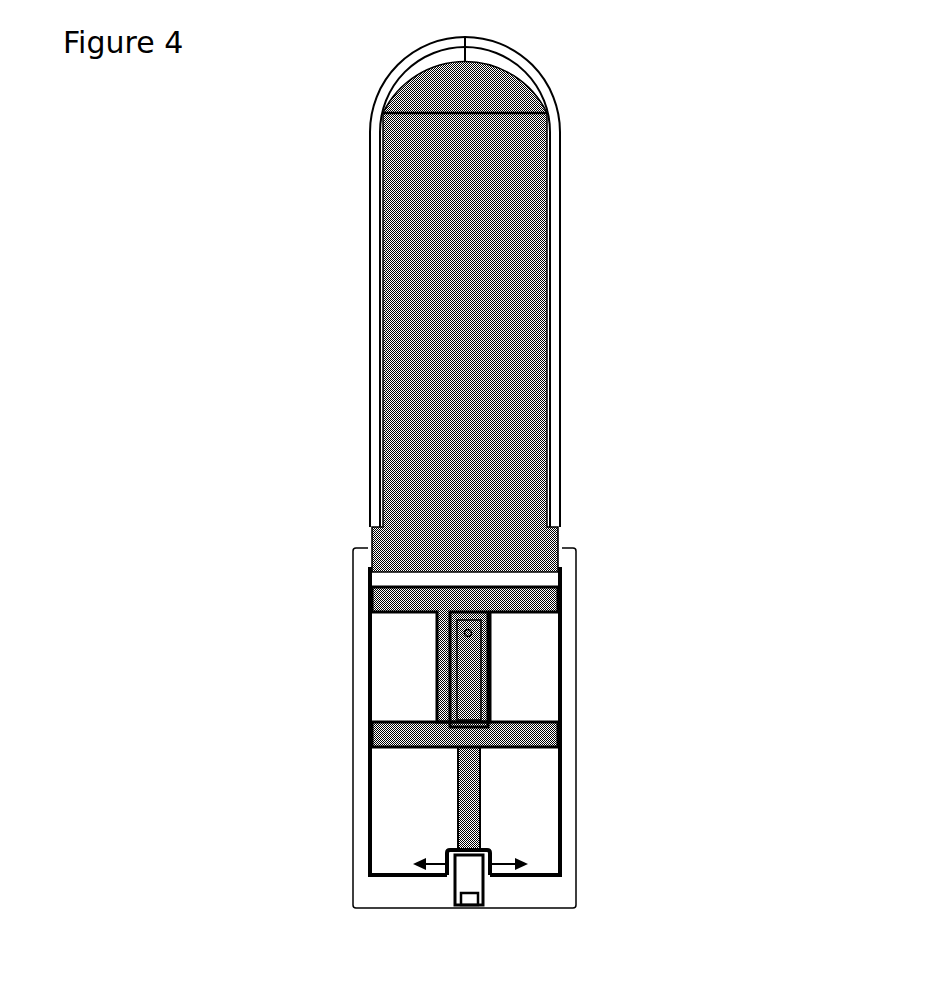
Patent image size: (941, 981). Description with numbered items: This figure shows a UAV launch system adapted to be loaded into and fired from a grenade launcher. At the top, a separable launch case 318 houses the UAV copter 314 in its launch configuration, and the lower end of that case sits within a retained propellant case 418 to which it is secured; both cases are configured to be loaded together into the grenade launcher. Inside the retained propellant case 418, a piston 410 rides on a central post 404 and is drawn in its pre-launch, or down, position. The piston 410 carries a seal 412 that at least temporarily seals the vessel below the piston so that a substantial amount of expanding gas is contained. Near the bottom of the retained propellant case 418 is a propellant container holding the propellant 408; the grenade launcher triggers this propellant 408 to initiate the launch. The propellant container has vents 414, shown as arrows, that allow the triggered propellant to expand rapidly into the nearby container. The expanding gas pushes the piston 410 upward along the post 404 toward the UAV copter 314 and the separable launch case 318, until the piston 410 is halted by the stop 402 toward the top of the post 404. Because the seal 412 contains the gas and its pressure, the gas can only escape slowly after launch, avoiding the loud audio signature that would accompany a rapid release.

The UAV copter 314 is at (373, 223).
The separable launch case 318 is at (567, 155).
The stop 402 is at (370, 593).
The post 404 is at (455, 770).
The propellant 408 is at (453, 885).
The piston 410 is at (568, 582).
The seal 412 is at (568, 737).
The vents 414 is at (497, 857).
The retained propellant case 418 is at (580, 888).